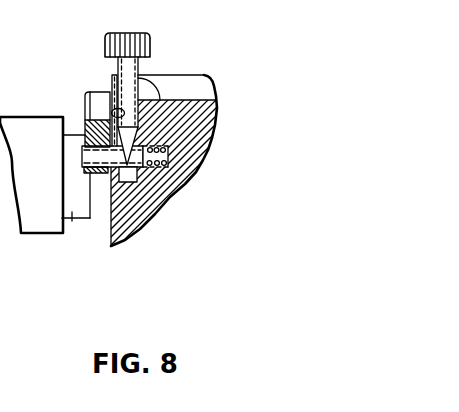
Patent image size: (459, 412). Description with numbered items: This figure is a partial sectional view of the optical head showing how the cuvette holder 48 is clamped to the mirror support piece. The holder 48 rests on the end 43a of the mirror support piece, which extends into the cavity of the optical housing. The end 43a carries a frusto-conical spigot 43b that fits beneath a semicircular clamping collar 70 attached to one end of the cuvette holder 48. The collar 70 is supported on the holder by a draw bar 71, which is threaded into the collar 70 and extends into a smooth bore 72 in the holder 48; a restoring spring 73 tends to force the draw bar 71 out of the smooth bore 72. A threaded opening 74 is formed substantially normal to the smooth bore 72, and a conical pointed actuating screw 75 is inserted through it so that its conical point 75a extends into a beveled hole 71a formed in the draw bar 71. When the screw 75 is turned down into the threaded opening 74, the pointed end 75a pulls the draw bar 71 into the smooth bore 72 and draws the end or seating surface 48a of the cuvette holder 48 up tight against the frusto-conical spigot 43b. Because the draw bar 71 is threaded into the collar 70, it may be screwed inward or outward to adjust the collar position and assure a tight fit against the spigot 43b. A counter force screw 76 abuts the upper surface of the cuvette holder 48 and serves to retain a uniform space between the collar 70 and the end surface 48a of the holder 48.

The end of mirror support piece 43a is at (72, 220).
The frusto-conical spigot 43b is at (96, 217).
The cuvette holder 48 is at (217, 95).
The seating surface of cuvette holder 48a is at (111, 246).
The semicircular clamping collar 70 is at (97, 100).
The draw bar 71 is at (82, 155).
The beveled hole 71a is at (83, 161).
The smooth bore 72 is at (169, 158).
The restoring spring 73 is at (137, 168).
The threaded opening 74 is at (113, 116).
The actuating screw 75 is at (140, 74).
The conical point 75a is at (139, 130).
The counter force screw 76 is at (107, 98).